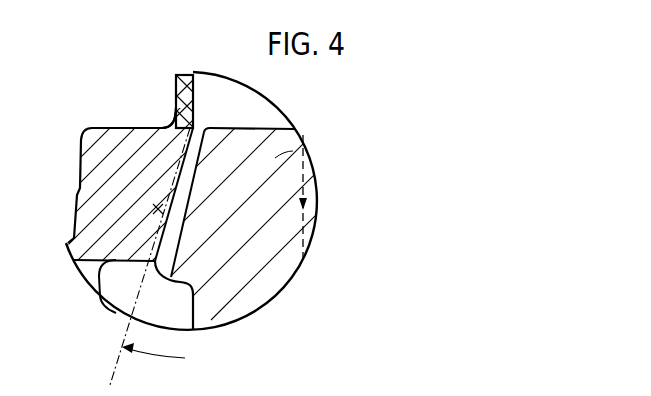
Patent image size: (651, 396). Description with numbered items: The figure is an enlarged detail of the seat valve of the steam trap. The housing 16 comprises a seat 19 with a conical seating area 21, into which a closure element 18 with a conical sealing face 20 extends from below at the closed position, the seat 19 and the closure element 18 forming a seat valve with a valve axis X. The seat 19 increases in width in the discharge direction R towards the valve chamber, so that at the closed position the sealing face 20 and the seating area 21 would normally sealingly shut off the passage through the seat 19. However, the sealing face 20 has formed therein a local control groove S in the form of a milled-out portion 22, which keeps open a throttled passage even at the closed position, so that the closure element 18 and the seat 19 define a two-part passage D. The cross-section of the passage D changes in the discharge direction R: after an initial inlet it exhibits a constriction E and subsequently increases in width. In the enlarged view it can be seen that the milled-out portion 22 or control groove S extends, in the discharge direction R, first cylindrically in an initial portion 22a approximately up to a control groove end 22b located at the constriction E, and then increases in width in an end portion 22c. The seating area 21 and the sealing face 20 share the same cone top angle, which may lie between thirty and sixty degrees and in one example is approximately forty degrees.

The housing 16 is at (100, 137).
The closure element 18 is at (299, 134).
The seat 19 is at (178, 188).
The sealing face 20 is at (195, 188).
The seating area 21 is at (158, 210).
The milled-out portion 22 is at (159, 282).
The initial portion 22a is at (176, 90).
The control groove end 22b is at (167, 130).
The end portion 22c is at (200, 248).
The control groove S is at (165, 262).
The passage D is at (208, 120).
The constriction E is at (211, 169).
The discharge direction R is at (318, 194).
The valve axis X is at (307, 246).